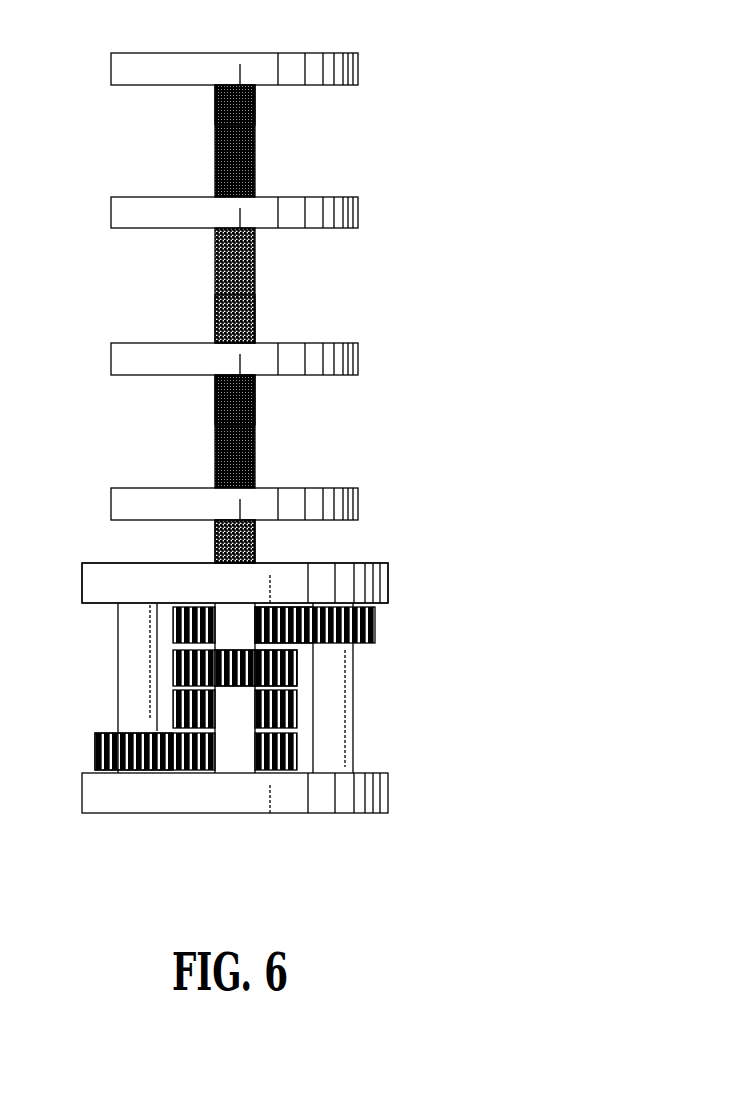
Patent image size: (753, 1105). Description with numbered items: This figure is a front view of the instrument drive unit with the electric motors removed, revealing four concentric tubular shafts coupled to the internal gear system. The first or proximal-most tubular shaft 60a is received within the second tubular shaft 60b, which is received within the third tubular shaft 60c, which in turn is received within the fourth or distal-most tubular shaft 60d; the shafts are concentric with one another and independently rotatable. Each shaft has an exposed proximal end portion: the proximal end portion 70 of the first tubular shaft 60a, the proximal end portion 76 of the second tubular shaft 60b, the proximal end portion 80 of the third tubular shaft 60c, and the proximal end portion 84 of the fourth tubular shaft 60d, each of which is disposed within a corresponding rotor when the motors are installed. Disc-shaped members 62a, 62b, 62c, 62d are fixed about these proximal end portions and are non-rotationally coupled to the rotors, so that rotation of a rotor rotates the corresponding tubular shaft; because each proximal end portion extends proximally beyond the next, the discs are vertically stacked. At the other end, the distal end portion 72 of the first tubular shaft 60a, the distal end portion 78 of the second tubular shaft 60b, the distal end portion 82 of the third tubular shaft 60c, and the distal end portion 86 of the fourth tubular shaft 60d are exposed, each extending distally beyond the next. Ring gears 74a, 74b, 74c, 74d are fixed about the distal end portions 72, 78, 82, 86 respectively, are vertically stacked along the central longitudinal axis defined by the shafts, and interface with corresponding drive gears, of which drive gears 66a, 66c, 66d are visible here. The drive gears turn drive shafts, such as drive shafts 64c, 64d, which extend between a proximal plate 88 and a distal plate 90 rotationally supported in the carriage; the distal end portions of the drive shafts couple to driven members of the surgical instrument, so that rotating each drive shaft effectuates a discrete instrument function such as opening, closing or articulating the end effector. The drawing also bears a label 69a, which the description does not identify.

The first tubular shaft 60a is at (257, 142).
The second tubular shaft 60b is at (257, 282).
The third tubular shaft 60c is at (257, 448).
The fourth tubular shaft 60d is at (257, 552).
The disc-shaped member 62a is at (358, 57).
The disc-shaped member 62b is at (358, 202).
The disc-shaped member 62c is at (358, 347).
The disc-shaped member 62d is at (358, 493).
The proximal end portion 70 is at (257, 107).
The proximal end portion 76 is at (257, 313).
The proximal end portion 80 is at (257, 417).
The proximal end portion 84 is at (215, 538).
The distal end portion 86 is at (215, 605).
The proximal plate 88 is at (388, 568).
The distal plate 90 is at (103, 803).
The housing wall 69a is at (132, 615).
The drive shaft 64c is at (223, 767).
The drive shaft 64d is at (347, 652).
The drive gear 66a is at (95, 750).
The drive gear 66c is at (240, 687).
The drive gear 66d is at (375, 620).
The distal end portion 72 is at (110, 733).
The distal end portion 78 is at (173, 688).
The distal end portion 82 is at (213, 647).
The ring gear 74a is at (297, 755).
The ring gear 74b is at (297, 710).
The ring gear 74c is at (297, 667).
The ring gear 74d is at (268, 627).